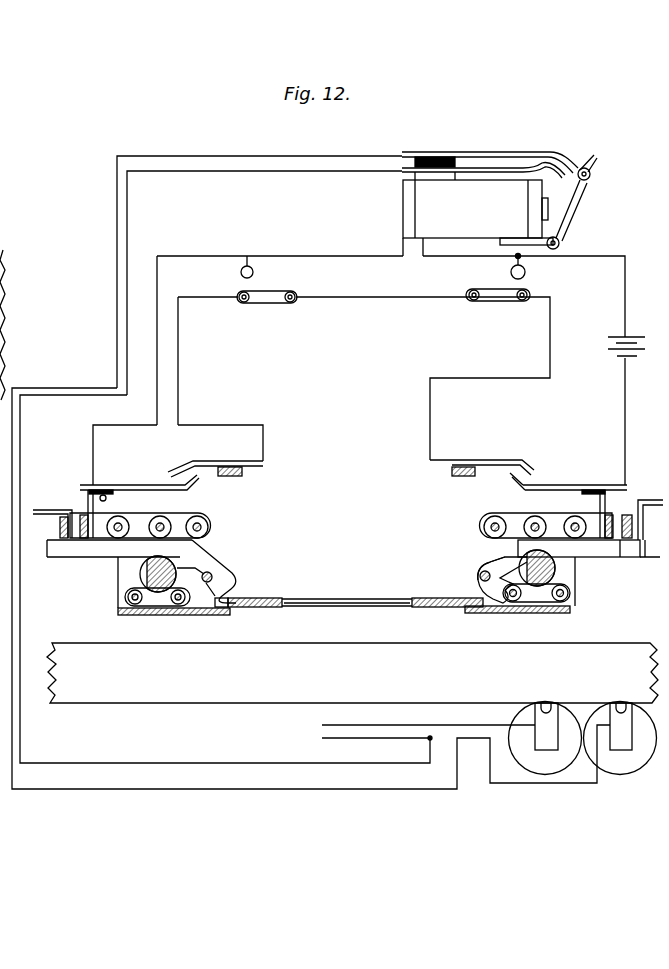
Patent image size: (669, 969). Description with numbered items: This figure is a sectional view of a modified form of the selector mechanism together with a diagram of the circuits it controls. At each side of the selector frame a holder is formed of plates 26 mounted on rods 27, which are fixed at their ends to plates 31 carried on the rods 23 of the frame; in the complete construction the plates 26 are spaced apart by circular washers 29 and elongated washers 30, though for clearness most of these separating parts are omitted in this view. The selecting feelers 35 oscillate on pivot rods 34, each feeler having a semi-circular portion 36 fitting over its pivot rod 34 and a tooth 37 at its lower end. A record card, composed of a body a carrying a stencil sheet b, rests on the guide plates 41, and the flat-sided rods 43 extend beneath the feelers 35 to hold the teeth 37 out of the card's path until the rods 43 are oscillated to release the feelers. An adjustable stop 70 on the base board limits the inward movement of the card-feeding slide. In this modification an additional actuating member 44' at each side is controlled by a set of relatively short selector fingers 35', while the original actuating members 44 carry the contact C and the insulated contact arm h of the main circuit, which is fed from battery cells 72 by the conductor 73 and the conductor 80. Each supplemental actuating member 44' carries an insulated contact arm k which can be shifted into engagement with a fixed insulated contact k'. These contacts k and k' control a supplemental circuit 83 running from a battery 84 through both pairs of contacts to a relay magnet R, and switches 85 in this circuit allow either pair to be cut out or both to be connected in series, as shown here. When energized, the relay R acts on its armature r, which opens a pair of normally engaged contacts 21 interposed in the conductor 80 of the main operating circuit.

The normally engaged contacts 21 is at (475, 167).
The relay magnet R is at (432, 213).
The armature r is at (561, 220).
The conductor 80 is at (117, 224).
The supplemental circuit 83 is at (157, 384).
The battery 84 is at (608, 350).
The switches 85 is at (272, 297).
The fixed insulated contacts k' is at (351, 455).
The insulated contact arms k is at (353, 477).
The additional actuating member 44' is at (345, 495).
The actuating member 44 is at (338, 506).
The contact C is at (45, 508).
The contact arm h is at (650, 520).
The plates 31 is at (199, 514).
The rods 23 is at (119, 524).
The rods 27 is at (163, 522).
The circular washers 29 is at (530, 518).
The selecting feelers 35 is at (345, 571).
The relatively short selector fingers 35' is at (349, 571).
The plates 26 is at (125, 577).
The elongated washers 30 is at (128, 614).
The guide plates 41 is at (218, 606).
The stencil sheet b is at (328, 606).
The card body a is at (428, 606).
The rods 43 is at (178, 568).
The tooth 37 is at (226, 590).
The semi-circular portion 36 is at (478, 578).
The pivot rods 34 is at (212, 577).
The adjustable stop 70 is at (128, 697).
The conductor 73 is at (427, 725).
The battery cells 72 is at (597, 722).